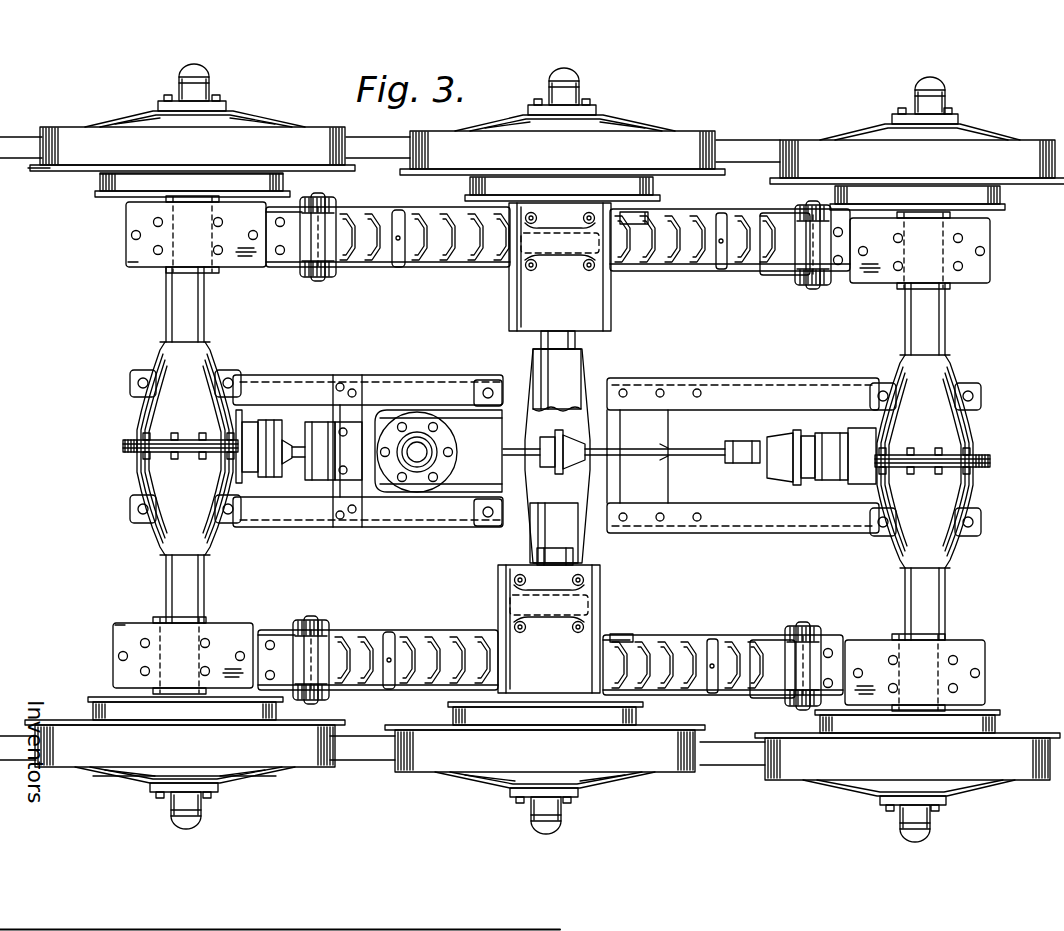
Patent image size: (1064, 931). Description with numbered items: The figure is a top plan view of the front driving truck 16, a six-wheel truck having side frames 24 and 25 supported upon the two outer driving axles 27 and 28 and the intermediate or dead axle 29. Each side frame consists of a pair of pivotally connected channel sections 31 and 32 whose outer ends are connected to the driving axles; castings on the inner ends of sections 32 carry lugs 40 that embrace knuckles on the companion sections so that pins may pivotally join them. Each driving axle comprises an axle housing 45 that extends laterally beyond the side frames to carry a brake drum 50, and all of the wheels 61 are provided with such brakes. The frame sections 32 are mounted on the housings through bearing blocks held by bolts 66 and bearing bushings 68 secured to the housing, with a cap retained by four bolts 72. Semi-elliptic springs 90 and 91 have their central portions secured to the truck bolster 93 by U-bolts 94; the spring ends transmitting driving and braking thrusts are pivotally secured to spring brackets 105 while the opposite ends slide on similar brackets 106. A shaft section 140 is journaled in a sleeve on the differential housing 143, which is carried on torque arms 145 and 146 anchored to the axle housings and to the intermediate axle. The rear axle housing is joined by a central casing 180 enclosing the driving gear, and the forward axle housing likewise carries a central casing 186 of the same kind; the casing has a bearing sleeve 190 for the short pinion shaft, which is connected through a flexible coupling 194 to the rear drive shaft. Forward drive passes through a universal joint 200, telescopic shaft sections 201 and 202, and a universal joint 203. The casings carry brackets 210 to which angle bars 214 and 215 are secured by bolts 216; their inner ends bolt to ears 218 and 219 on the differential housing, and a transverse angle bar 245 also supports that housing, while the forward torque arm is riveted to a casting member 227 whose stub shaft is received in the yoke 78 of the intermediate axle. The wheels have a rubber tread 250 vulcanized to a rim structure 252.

The driving truck 16 is at (119, 260).
The side frame 24 is at (145, 260).
The side frame 25 is at (125, 615).
The driving axle 27 is at (168, 302).
The driving axle 28 is at (907, 333).
The intermediate or dead axle 29 is at (578, 340).
The frame section 31 is at (452, 267).
The frame section 32 is at (700, 270).
The lugs 40 is at (640, 270).
The axle housing 45 is at (205, 316).
The brake drum 50 is at (105, 182).
The wheels 61 is at (148, 120).
The bolts 66 is at (133, 235).
The bearing collar or bushing 68 is at (210, 268).
The bolts 72 is at (212, 250).
The yoke 78 is at (578, 385).
The semi-elliptic spring 90 is at (655, 640).
The semi-elliptic spring 91 is at (425, 268).
The truck bolster 93 is at (605, 575).
The U-bolts 94 is at (585, 270).
The spring brackets 105 is at (300, 272).
The spring brackets 106 is at (785, 272).
The shaft section 140 is at (418, 450).
The differential housing 143 is at (385, 410).
The torque arm 145 is at (300, 378).
The torque arm 146 is at (790, 378).
The central casing 180 is at (135, 425).
The axle housing 186 is at (900, 520).
The bearing sleeve 190 is at (250, 472).
The flexible coupling 194 is at (310, 490).
The universal joint 200 is at (560, 470).
The telescopic shaft section 201 is at (710, 460).
The telescopic shaft section 202 is at (742, 446).
The universal joint 203 is at (780, 478).
The brackets or bosses 210 is at (218, 372).
The angle bar 214 is at (328, 378).
The angle bar 215 is at (380, 530).
The bolts 216 is at (130, 386).
The ear 218 is at (485, 382).
The ear 219 is at (478, 525).
The casting member 227 is at (660, 452).
The transverse angle bar 245 is at (330, 500).
The tread 250 is at (42, 148).
The rim structure 252 is at (48, 170).